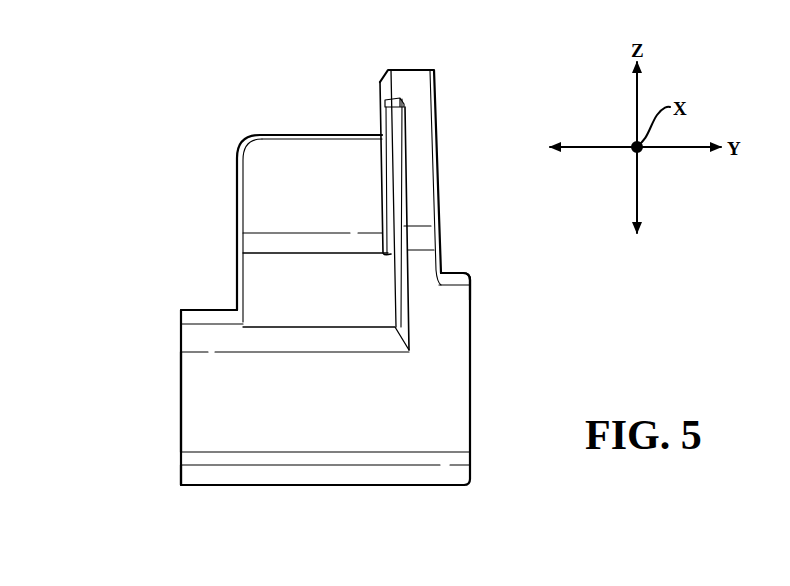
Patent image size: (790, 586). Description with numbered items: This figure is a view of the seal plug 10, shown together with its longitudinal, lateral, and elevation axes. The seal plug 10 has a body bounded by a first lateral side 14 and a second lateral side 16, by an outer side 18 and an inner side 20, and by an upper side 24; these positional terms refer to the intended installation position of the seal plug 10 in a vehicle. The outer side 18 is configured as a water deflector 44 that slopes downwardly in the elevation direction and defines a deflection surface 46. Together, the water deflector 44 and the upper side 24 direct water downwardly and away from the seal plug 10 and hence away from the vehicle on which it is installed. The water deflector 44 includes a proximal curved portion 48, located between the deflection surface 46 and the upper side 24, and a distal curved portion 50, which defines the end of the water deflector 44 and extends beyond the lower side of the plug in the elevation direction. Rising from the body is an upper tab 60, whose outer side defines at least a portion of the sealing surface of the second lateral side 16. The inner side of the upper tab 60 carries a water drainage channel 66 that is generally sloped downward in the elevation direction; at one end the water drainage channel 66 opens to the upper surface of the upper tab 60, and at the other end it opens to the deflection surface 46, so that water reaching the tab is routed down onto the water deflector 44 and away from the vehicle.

The seal plug 10 is at (118, 162).
The first lateral side 14 is at (188, 280).
The second lateral side 16 is at (487, 259).
The outer side 18 is at (348, 492).
The inner side 20 is at (335, 128).
The upper side 24 is at (260, 165).
The water deflector 44 is at (405, 390).
The deflection surface 46 is at (197, 392).
The proximal curved portion 48 is at (197, 340).
The distal curved portion 50 is at (195, 483).
The upper tab 60 is at (450, 120).
The water drainage channel 66 is at (402, 103).